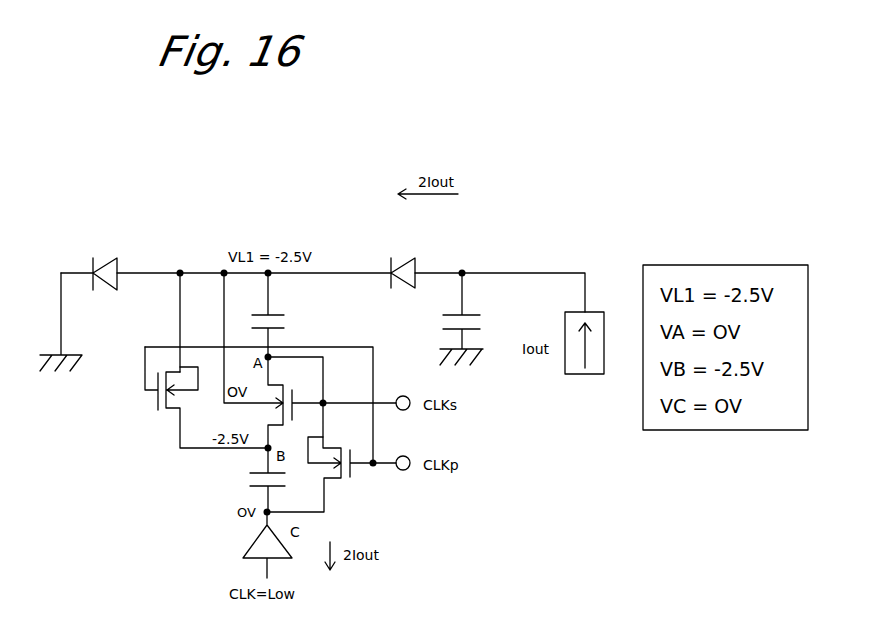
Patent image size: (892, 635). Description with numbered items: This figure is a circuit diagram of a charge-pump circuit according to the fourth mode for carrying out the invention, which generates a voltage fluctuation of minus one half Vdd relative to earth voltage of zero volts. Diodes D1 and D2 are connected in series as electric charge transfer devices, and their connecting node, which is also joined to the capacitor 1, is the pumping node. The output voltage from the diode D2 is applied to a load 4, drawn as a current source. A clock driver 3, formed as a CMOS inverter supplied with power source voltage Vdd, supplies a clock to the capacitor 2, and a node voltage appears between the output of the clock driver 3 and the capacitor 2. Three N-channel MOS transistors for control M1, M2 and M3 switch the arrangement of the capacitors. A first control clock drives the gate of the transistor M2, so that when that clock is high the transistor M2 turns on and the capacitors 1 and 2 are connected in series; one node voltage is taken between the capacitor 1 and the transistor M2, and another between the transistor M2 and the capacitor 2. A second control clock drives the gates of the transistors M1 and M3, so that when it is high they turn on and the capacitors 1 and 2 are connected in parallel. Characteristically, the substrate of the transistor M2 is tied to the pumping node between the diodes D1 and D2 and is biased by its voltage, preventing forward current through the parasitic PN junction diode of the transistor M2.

The capacitor 1 is at (294, 322).
The capacitor 2 is at (244, 483).
The clock driver 3 is at (245, 545).
The load 4 is at (578, 380).
The diode D1 is at (115, 248).
The diode D2 is at (408, 246).
The MOS transistor for control M1 is at (206, 397).
The MOS transistor for control M2 is at (332, 402).
The MOS transistor for control M3 is at (331, 474).